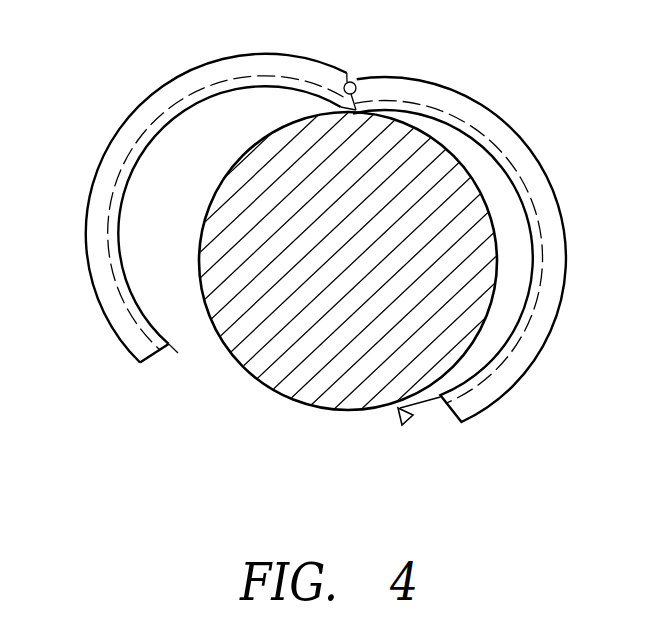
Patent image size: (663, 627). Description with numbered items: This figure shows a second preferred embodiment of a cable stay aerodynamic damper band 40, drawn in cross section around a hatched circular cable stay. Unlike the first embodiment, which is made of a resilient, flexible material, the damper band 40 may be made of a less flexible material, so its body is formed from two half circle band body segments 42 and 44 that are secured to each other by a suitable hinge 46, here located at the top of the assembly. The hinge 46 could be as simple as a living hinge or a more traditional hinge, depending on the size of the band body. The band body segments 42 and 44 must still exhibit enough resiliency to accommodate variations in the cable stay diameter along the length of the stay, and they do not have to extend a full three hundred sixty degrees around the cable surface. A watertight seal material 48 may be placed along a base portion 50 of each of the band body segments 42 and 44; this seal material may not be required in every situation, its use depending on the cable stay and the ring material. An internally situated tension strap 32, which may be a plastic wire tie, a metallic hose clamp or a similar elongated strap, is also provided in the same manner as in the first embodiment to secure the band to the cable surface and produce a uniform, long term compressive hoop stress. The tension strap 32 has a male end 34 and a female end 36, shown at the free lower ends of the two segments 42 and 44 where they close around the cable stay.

The cable stay aerodynamic damper band 40 is at (334, 261).
The band body segment 42 is at (547, 203).
The band body segment 44 is at (115, 158).
The hinge 46 is at (351, 81).
The watertight seal material 48 is at (113, 238).
The base portion 50 is at (127, 188).
The tension strap 32 is at (178, 353).
The male end 34 is at (175, 363).
The female end 36 is at (402, 414).